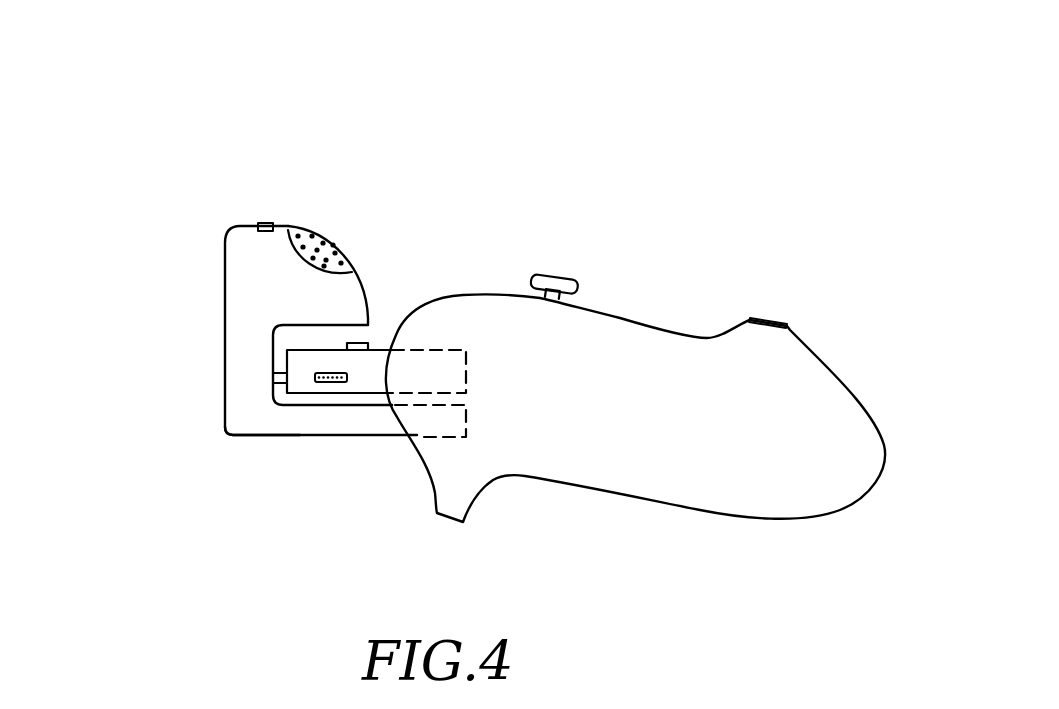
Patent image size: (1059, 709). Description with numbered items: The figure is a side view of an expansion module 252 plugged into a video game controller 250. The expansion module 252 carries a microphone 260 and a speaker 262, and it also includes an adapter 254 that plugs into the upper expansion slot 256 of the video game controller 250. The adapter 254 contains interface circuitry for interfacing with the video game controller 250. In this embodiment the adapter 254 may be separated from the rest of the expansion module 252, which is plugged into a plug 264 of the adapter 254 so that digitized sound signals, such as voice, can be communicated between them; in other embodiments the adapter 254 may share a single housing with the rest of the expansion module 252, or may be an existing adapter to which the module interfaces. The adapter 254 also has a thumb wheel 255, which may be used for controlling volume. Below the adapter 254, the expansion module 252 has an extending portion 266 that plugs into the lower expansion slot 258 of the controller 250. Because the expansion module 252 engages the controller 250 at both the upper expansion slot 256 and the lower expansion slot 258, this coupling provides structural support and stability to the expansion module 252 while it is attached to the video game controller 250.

The video game controller 250 is at (643, 325).
The expansion module 252 is at (386, 190).
The adapter 254 is at (380, 350).
The thumb wheel 255 is at (323, 385).
The upper expansion slot 256 is at (466, 366).
The lower expansion slot 258 is at (466, 426).
The microphone 260 is at (267, 222).
The speaker 262 is at (323, 235).
The plug 264 is at (273, 382).
The extending portion 266 is at (237, 427).